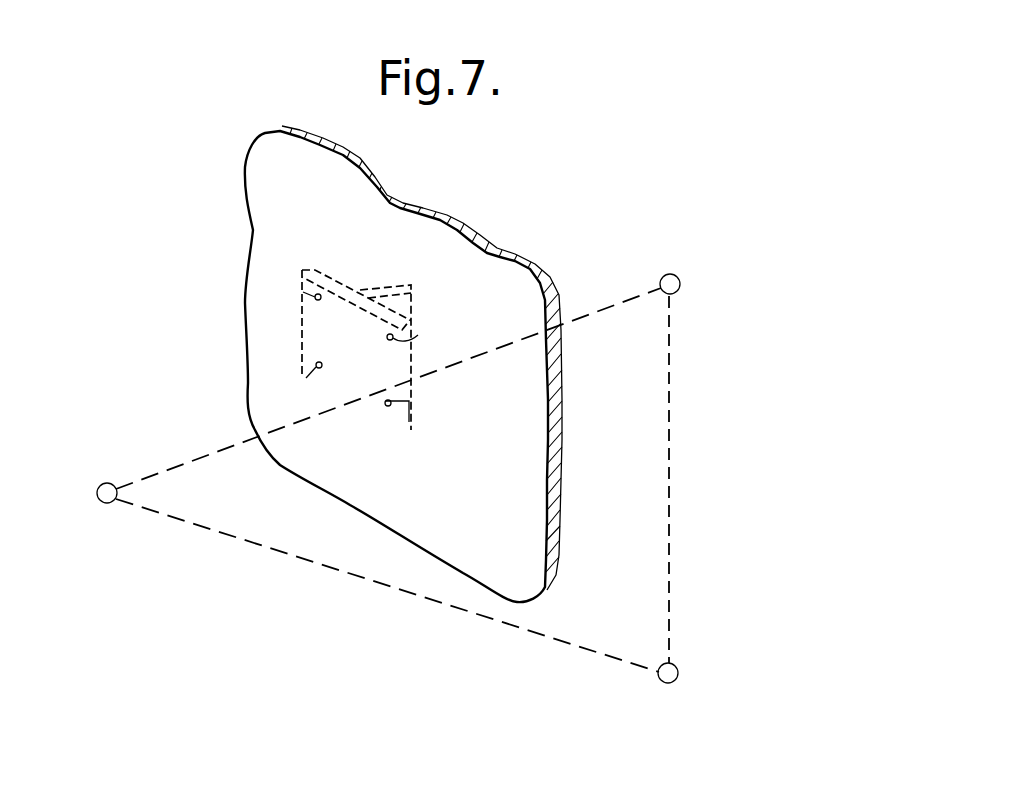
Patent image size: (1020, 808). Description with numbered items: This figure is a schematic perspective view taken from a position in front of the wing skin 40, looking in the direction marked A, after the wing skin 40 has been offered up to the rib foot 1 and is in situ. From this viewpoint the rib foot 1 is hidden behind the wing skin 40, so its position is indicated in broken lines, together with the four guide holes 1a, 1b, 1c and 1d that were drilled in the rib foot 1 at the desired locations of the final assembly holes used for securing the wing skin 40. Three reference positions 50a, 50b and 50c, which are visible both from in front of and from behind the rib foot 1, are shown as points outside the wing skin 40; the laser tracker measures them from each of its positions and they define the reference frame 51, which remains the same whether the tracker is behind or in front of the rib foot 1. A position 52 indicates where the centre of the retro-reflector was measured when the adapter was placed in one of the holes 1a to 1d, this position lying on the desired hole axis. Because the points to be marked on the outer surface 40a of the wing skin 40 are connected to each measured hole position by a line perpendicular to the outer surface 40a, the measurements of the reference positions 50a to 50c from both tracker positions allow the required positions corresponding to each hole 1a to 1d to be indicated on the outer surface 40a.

The wing skin 40 is at (544, 214).
The outer surface of the wing skin 40a is at (510, 294).
The rib foot 1 is at (371, 275).
The guide hole 1a is at (389, 407).
The guide hole 1b is at (306, 378).
The guide hole 1c is at (418, 335).
The guide hole 1d is at (303, 292).
The measured position 52 is at (412, 403).
The reference position 50a is at (675, 294).
The reference position 50b is at (679, 675).
The reference position 50c is at (106, 483).
The reference frame 51 is at (671, 493).
The direction A is at (242, 575).